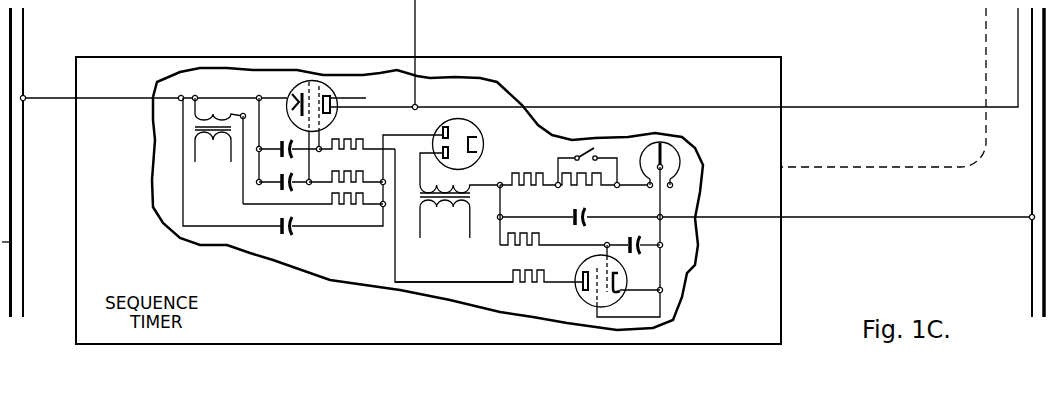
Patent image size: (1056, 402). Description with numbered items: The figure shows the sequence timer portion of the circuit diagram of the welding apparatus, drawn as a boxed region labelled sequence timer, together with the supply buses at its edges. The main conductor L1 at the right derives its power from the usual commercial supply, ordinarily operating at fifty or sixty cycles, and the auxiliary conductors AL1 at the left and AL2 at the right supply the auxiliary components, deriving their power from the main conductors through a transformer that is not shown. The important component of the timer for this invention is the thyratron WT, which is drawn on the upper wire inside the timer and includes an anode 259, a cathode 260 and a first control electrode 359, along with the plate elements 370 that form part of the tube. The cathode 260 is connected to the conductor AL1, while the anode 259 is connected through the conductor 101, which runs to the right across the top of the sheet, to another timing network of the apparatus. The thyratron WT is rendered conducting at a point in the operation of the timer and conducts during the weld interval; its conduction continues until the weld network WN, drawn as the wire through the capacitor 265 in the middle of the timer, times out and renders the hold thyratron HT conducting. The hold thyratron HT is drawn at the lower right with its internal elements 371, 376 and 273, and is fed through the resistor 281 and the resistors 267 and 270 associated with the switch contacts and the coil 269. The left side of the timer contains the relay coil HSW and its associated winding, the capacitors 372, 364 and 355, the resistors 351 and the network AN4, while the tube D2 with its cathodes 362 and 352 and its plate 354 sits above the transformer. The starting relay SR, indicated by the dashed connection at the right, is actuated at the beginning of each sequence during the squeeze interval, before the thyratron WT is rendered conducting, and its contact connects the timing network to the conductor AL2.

The conductor 101 is at (938, 107).
The anode 259 is at (337, 111).
The cathode 260 is at (292, 95).
The capacitor 265 is at (588, 222).
The resistor 267 is at (529, 172).
The relay coil 269 is at (676, 152).
The resistor 270 is at (580, 187).
The heater element of tube HT 273 is at (620, 294).
The resistor 281 is at (540, 240).
The resistor 351 is at (353, 206).
The cathode of tube D2 352 is at (441, 150).
The plate of tube D2 354 is at (485, 145).
The capacitor 355 is at (278, 222).
The first control electrode 359 is at (312, 90).
The cathode of tube D2 362 is at (441, 130).
The resistor 364 is at (334, 185).
The plate of tube WT 370 is at (322, 95).
The grid of tube HT 371 is at (596, 300).
The resistor 372 is at (338, 152).
The plate of tube HT 376 is at (582, 288).
The thyratron WT is at (337, 106).
The hold thyratron HT is at (583, 266).
The heater switch coil HSW is at (212, 116).
The diode tube D2 is at (477, 127).
The weld network WN is at (618, 209).
The conductor AN4 is at (340, 245).
The starting relay SR is at (985, 148).
The conductor L1 is at (1044, 188).
The conductor AL1 is at (23, 193).
The conductor AL2 is at (1032, 258).